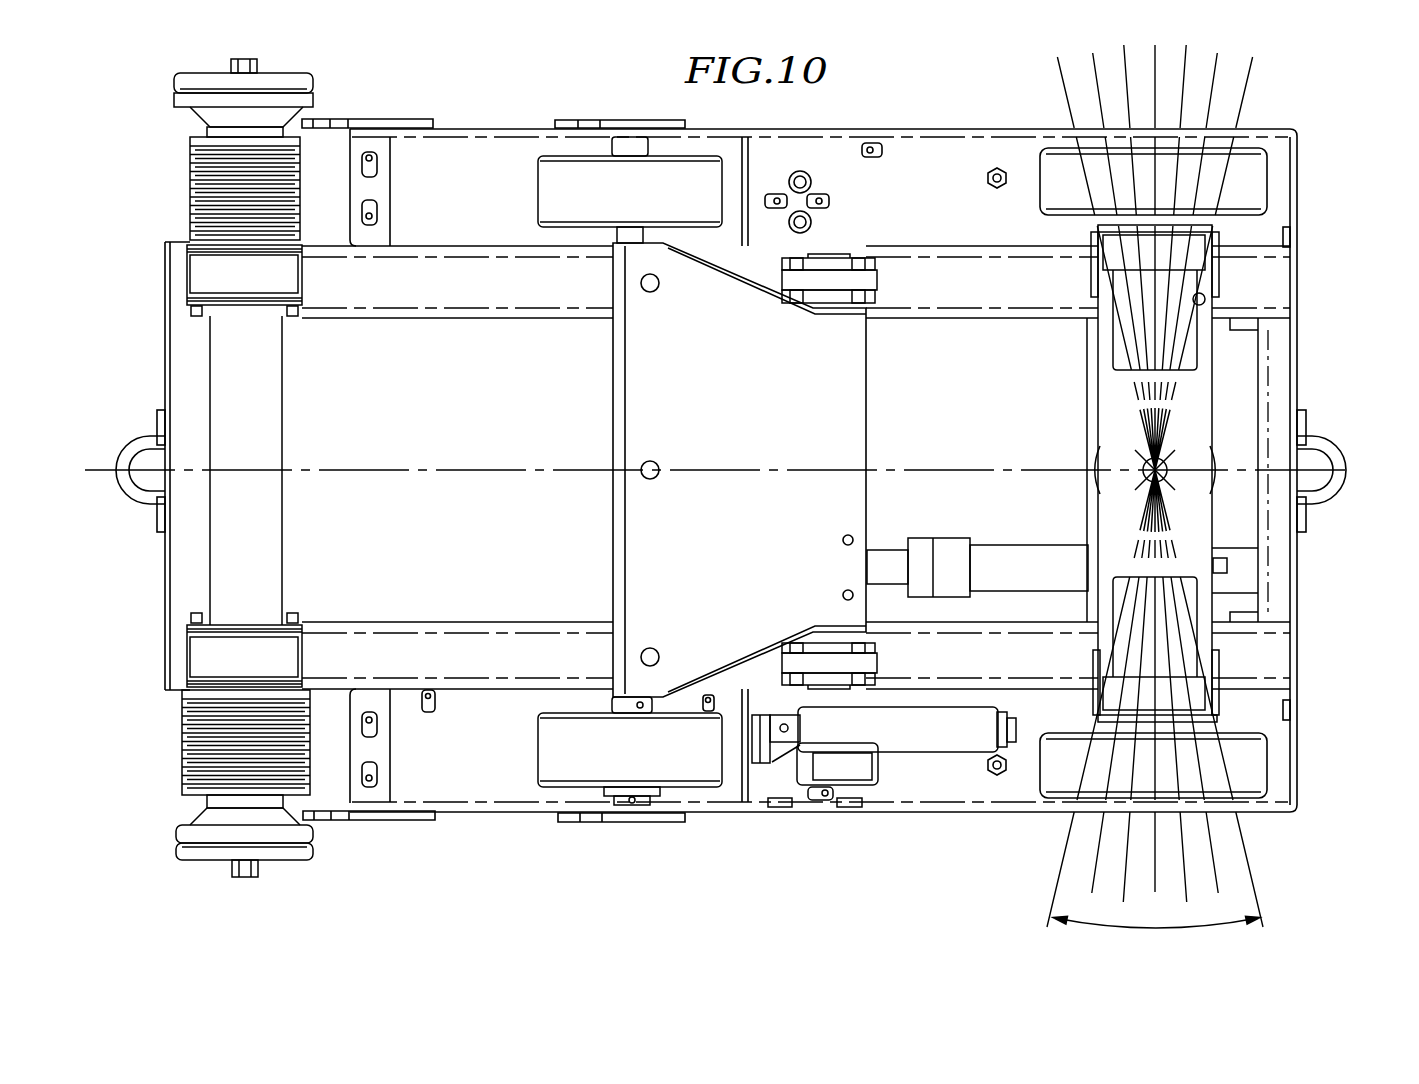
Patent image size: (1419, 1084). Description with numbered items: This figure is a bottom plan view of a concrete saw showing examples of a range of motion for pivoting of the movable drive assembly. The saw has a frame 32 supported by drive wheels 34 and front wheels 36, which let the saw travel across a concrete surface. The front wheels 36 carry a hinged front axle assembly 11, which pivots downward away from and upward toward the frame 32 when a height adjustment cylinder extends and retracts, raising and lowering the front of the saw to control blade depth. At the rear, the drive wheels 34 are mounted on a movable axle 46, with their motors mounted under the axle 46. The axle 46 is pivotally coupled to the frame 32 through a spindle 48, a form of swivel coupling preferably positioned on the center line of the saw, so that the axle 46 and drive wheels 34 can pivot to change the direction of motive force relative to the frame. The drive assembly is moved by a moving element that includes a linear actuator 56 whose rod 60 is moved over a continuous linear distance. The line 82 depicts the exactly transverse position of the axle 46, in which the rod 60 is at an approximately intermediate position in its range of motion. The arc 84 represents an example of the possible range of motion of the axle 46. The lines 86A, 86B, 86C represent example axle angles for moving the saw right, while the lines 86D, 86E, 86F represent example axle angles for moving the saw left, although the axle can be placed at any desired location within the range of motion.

The front axle assembly 11 is at (656, 388).
The frame 32 is at (1298, 205).
The drive wheels 34 is at (1253, 187).
The front wheels 36 is at (563, 763).
The axle 46 is at (1190, 404).
The spindle 48 is at (1150, 480).
The linear actuator 56 is at (897, 740).
The rod 60 is at (1023, 736).
The line 82 is at (1153, 77).
The arc 84 is at (1152, 931).
The line 86A is at (1062, 841).
The line 86B is at (1092, 868).
The line 86C is at (1122, 894).
The line 86D is at (1245, 841).
The line 86E is at (1215, 868).
The line 86F is at (1188, 894).